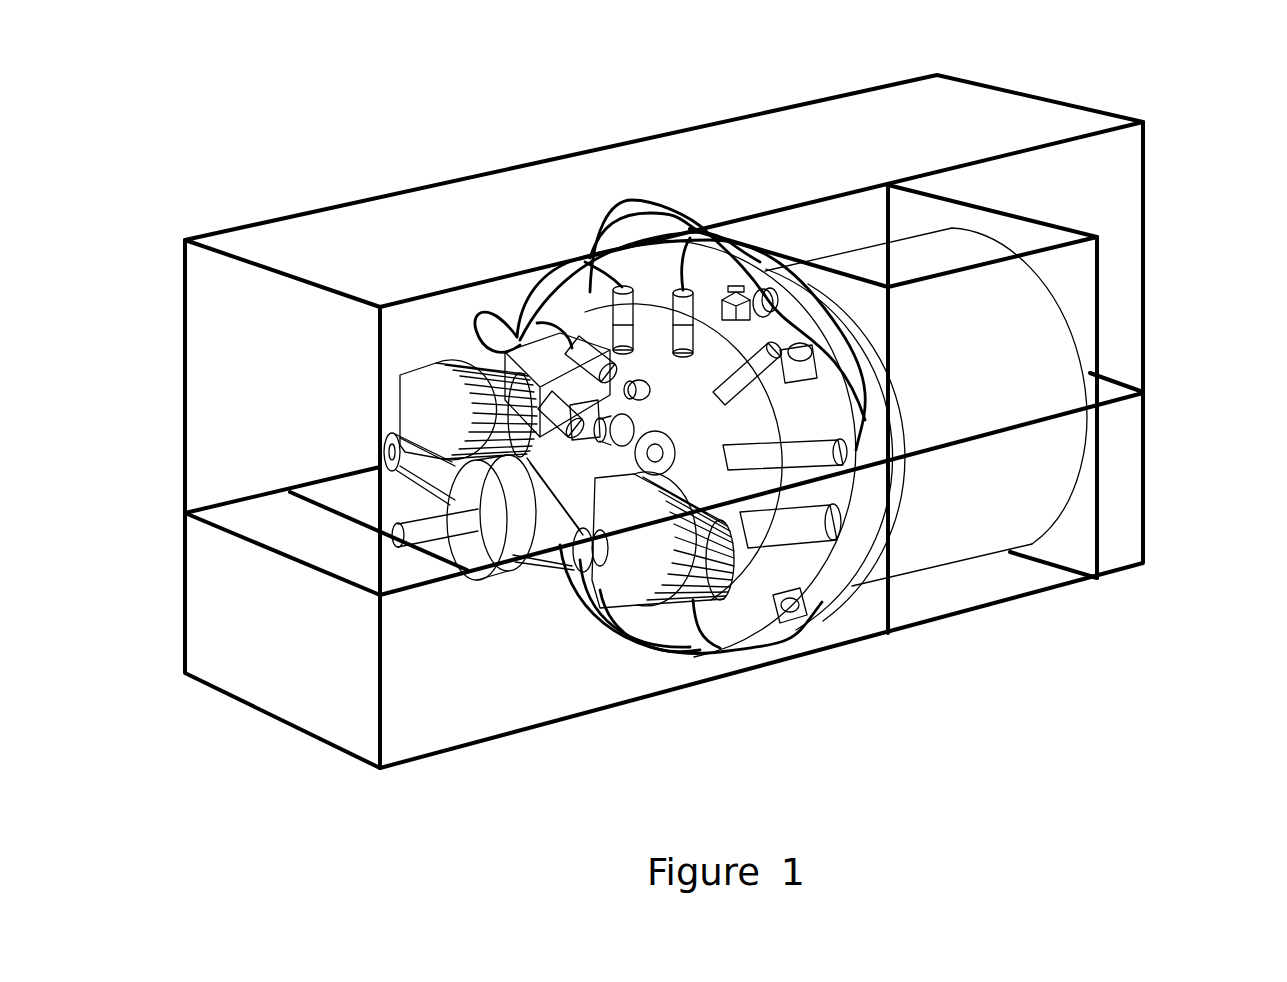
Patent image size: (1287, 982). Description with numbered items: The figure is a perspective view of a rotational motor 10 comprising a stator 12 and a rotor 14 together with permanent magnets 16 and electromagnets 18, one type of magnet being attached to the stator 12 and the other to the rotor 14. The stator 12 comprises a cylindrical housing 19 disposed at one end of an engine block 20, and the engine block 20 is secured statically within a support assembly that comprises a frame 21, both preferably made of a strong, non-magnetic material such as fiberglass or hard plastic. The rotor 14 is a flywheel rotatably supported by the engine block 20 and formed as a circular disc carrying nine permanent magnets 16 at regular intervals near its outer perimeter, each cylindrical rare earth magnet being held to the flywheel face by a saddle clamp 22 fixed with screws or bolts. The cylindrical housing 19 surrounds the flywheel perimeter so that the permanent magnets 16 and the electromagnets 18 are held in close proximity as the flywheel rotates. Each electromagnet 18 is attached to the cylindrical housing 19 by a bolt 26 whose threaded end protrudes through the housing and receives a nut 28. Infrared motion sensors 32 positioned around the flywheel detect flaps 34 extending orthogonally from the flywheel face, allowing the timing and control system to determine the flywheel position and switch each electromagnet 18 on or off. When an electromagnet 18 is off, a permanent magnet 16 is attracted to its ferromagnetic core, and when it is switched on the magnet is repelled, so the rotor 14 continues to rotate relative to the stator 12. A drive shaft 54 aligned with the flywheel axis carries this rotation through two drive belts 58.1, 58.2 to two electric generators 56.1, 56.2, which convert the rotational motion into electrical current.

The rotational motor 10 is at (1040, 298).
The stator 12 is at (710, 317).
The rotor 14 is at (640, 455).
The permanent magnet 16 is at (600, 378).
The electromagnet 18 is at (765, 292).
The cylindrical housing 19 is at (848, 495).
The engine block 20 is at (1060, 360).
The frame 21 is at (978, 80).
The saddle clamp 22 is at (530, 345).
The bolt 26 is at (737, 287).
The nut 28 is at (835, 365).
The infrared motion sensor 32 is at (790, 610).
The flap 34 is at (650, 357).
The drive shaft 54 is at (430, 532).
The electric generator 56.1 is at (410, 395).
The electric generator 56.2 is at (645, 580).
The drive belt 58.1 is at (410, 478).
The drive belt 58.2 is at (565, 545).